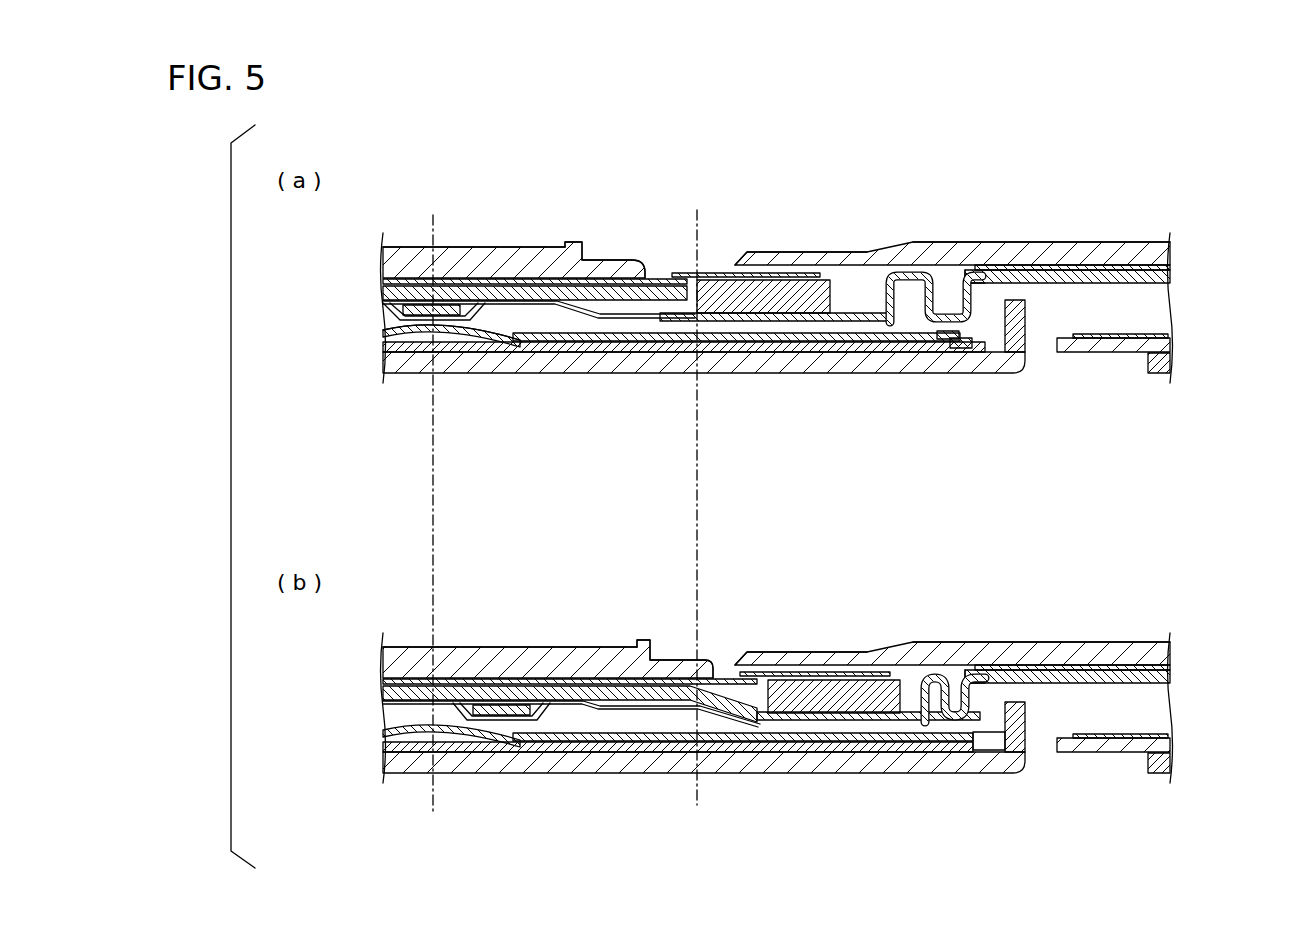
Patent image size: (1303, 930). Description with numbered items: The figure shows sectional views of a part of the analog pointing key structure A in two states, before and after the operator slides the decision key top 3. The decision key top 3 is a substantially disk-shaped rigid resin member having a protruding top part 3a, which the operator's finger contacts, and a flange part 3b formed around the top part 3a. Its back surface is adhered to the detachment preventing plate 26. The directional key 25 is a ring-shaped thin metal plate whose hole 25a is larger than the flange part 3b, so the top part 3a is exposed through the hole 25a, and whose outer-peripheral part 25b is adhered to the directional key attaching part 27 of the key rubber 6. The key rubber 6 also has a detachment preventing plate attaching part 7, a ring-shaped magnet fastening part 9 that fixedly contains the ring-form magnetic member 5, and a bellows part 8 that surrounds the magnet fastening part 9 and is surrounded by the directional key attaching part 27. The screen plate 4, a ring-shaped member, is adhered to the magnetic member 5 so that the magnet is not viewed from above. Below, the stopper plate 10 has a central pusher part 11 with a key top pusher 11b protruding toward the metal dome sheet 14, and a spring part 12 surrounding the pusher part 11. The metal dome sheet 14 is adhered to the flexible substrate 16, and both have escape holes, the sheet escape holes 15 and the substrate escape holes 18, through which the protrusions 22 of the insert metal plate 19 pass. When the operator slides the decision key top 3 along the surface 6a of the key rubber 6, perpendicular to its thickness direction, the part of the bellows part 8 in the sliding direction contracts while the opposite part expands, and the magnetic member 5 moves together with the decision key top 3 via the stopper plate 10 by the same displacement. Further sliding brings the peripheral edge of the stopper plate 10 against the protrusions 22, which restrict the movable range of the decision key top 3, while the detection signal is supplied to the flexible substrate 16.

The decision key top 3 is at (470, 250).
The top part 3a is at (528, 250).
The flange part 3b is at (598, 258).
The screen plate 4 is at (697, 272).
The ring-form magnetic member 5 is at (783, 313).
The key rubber 6 is at (1153, 277).
The surface of the key rubber 6a is at (984, 271).
The detachment preventing plate attaching part 7 is at (530, 300).
The bellows part 8 is at (918, 272).
The ring-form magnet fastening part 9 is at (858, 313).
The stopper plate 10 is at (877, 341).
The pusher part 11 is at (395, 321).
The key top pusher 11b is at (440, 331).
The spring part 12 is at (552, 318).
The metal dome sheet 14 is at (488, 343).
The sheet escape holes 15 is at (946, 340).
The flexible substrate 16 is at (1103, 352).
The substrate escape holes 18 is at (987, 349).
The insert metal plate 19 is at (822, 373).
The protrusions 22 is at (1023, 318).
The directional key 25 is at (818, 252).
The hole 25a is at (733, 258).
The outer-peripheral part 25b is at (1128, 247).
The detachment preventing plate 26 is at (655, 278).
The directional key attaching part 27 is at (1078, 266).
The analog pointing key structure A is at (1180, 192).